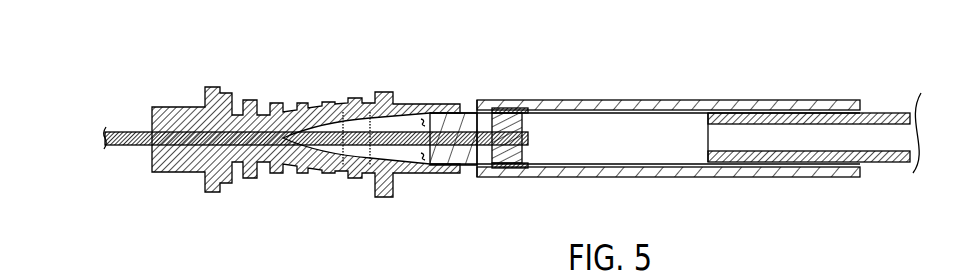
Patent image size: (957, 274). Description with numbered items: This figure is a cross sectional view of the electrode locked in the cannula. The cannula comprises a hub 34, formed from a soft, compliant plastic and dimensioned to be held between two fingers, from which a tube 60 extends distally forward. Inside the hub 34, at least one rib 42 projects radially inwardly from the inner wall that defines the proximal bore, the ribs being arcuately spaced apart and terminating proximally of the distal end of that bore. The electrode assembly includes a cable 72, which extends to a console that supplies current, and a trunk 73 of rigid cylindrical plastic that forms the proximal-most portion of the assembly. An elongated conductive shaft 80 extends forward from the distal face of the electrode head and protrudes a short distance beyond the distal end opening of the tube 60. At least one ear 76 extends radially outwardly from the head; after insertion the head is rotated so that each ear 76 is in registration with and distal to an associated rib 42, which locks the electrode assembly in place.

The tube 60 is at (120, 146).
The hub 34 is at (275, 177).
The conductive shaft 80 is at (347, 104).
The ear 76 is at (432, 172).
The rib 42 is at (447, 103).
The trunk 73 is at (668, 177).
The cable 72 is at (885, 113).